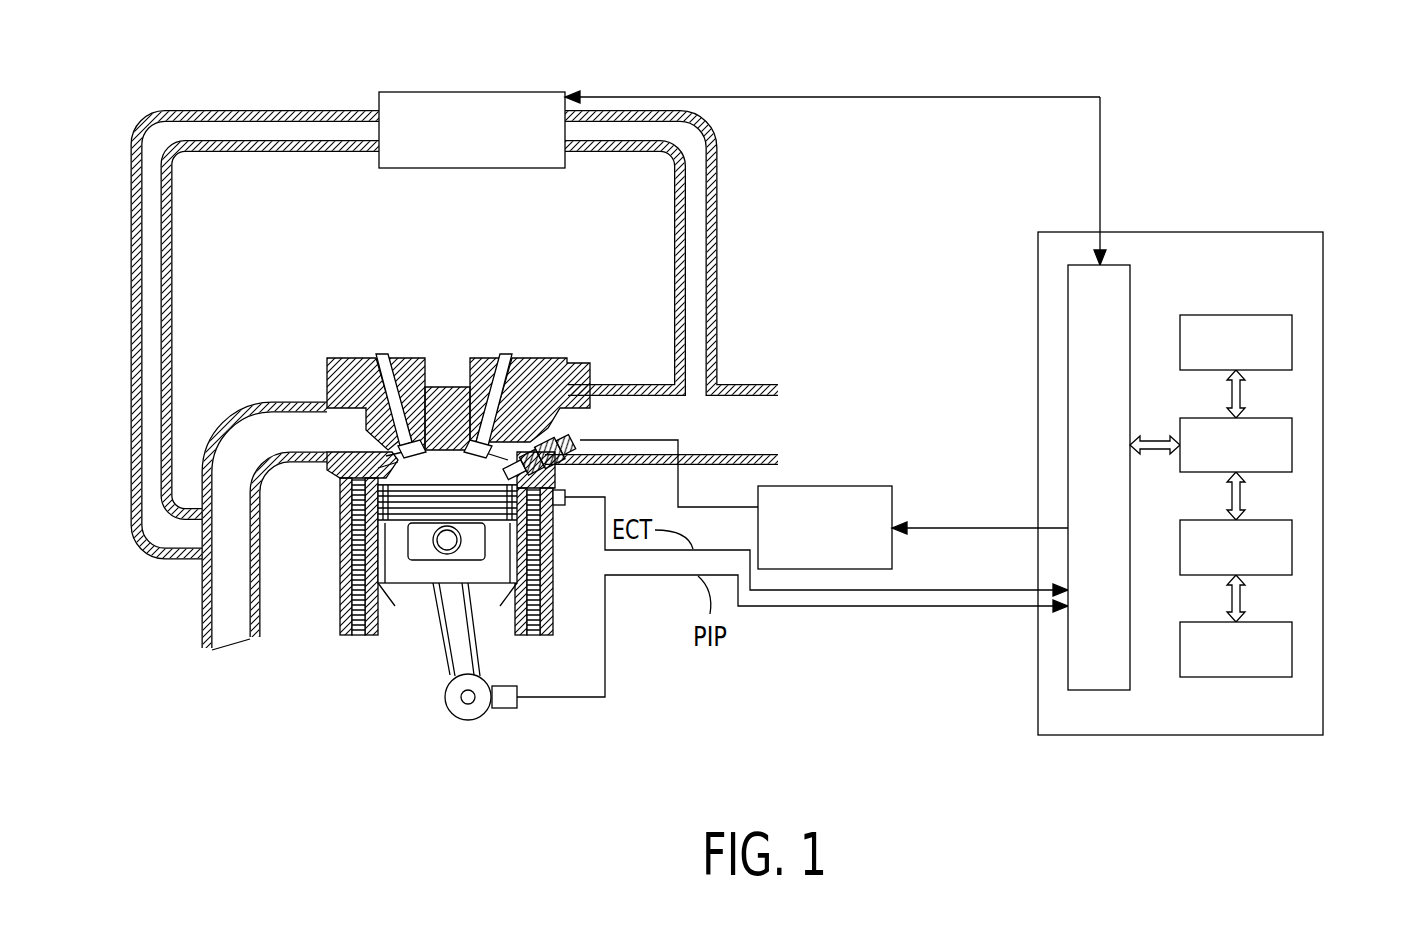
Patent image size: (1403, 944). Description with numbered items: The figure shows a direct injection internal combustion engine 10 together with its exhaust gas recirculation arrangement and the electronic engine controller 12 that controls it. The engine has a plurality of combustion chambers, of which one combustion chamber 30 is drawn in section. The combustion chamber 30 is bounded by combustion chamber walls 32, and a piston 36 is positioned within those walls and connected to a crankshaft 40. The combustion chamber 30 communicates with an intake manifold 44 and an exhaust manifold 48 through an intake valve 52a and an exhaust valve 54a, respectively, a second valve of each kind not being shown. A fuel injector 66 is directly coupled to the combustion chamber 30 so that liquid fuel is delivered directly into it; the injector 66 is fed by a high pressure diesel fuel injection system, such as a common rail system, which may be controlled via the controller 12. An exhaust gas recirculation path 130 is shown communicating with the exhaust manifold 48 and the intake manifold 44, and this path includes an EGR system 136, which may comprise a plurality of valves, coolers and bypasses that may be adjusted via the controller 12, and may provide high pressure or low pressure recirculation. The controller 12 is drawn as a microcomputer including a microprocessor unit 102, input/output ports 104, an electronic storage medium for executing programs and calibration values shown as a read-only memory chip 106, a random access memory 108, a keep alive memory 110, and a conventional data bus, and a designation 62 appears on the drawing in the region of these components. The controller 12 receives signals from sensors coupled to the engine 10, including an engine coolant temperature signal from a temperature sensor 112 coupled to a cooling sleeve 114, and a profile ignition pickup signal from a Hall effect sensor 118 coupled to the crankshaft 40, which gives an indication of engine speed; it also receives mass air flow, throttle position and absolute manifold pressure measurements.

The direct injection internal combustion engine 10 is at (366, 318).
The electronic engine controller 12 is at (1240, 233).
The combustion chamber 30 is at (362, 498).
The combustion chamber walls 32 is at (382, 632).
The piston 36 is at (425, 572).
The crankshaft 40 is at (445, 698).
The intake manifold 44 is at (756, 439).
The exhaust manifold 48 is at (258, 445).
The intake valve 52a is at (502, 448).
The exhaust valve 54a is at (400, 448).
The controller components 62 is at (1302, 300).
The fuel injector 66 is at (548, 462).
The microprocessor unit 102 is at (1293, 445).
The input/output ports 104 is at (1115, 266).
The read-only memory chip 106 is at (1293, 342).
The random access memory 108 is at (1293, 547).
The keep alive memory 110 is at (1293, 649).
The temperature sensor 112 is at (567, 497).
The cooling sleeve 114 is at (553, 612).
The Hall effect sensor 118 is at (520, 685).
The exhaust gas recirculation path 130 is at (338, 132).
The EGR system 136 is at (490, 143).